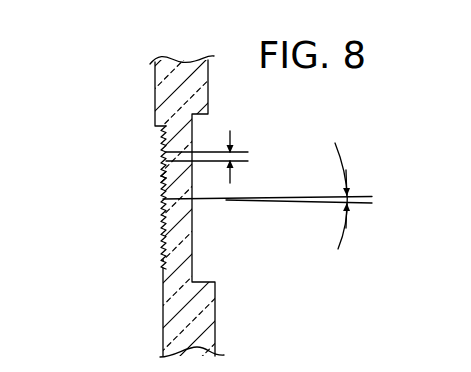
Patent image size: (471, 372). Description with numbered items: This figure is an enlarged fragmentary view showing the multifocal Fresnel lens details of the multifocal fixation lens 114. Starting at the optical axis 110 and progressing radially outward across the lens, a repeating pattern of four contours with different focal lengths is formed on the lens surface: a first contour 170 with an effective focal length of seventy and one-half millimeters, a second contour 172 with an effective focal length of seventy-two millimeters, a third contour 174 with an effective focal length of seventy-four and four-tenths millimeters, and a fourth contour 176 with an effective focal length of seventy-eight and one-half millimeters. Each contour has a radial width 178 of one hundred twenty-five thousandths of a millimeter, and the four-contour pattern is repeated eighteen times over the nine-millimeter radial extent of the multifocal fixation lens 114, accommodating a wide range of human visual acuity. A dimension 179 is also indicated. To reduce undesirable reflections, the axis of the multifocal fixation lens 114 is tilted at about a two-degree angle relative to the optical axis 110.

The multifocal fixation lens 114 is at (167, 238).
The first contour 170 is at (163, 193).
The second contour 172 is at (163, 179).
The third contour 174 is at (163, 176).
The fourth contour 176 is at (163, 174).
The radial width 178 is at (230, 131).
The optical axis 110 is at (302, 196).
The wire diameter 179 is at (303, 205).